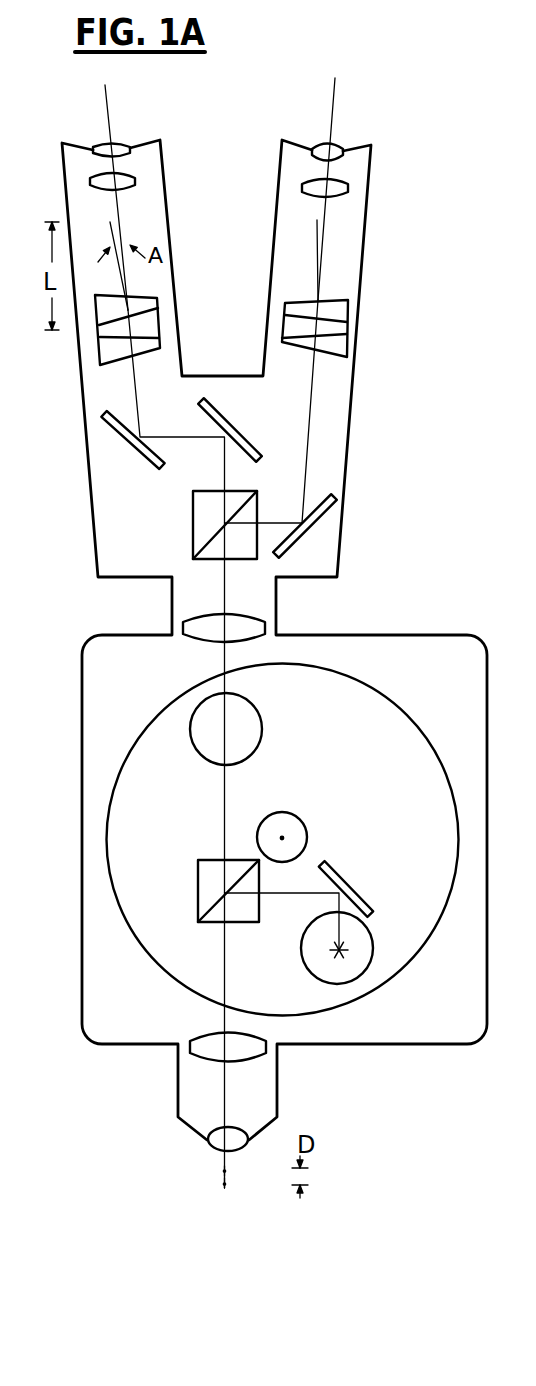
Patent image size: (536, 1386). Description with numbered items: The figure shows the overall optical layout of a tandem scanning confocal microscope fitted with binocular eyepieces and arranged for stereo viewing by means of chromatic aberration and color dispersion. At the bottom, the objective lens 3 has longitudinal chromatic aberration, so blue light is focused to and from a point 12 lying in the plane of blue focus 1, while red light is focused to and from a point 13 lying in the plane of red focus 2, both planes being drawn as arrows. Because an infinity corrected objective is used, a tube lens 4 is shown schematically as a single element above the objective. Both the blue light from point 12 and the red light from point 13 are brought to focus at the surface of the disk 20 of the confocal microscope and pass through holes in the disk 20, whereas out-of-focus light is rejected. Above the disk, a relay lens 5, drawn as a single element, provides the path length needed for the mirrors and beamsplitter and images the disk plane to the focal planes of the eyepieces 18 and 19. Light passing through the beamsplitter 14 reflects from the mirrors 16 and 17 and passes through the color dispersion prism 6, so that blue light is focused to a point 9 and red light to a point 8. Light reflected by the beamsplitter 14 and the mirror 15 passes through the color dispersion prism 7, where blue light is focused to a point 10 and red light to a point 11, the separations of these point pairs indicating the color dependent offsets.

The plane of blue focus 1 is at (237, 1168).
The plane of red focus 2 is at (237, 1185).
The objective lens 3 is at (247, 1130).
The tube lens 4 is at (203, 1059).
The relay lens 5 is at (215, 613).
The color dispersion prism 6 is at (158, 323).
The color dispersion prism 7 is at (285, 322).
The red focus point 8 is at (108, 222).
The blue focus point 9 is at (133, 204).
The blue focus point 10 is at (316, 224).
The red focus point 11 is at (330, 223).
The blue focus point 12 is at (230, 1171).
The red focus point 13 is at (226, 1184).
The beamsplitter 14 is at (193, 523).
The mirror 15 is at (290, 546).
The mirror 16 is at (230, 424).
The mirror 17 is at (139, 459).
The eyepiece 18 is at (137, 181).
The eyepiece 19 is at (303, 187).
The disk 20 is at (390, 698).